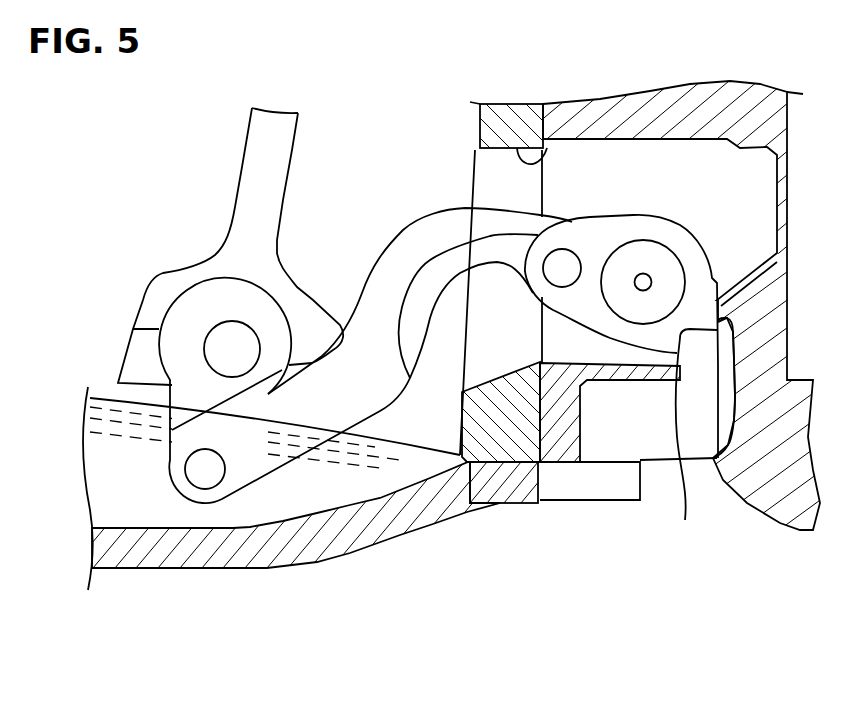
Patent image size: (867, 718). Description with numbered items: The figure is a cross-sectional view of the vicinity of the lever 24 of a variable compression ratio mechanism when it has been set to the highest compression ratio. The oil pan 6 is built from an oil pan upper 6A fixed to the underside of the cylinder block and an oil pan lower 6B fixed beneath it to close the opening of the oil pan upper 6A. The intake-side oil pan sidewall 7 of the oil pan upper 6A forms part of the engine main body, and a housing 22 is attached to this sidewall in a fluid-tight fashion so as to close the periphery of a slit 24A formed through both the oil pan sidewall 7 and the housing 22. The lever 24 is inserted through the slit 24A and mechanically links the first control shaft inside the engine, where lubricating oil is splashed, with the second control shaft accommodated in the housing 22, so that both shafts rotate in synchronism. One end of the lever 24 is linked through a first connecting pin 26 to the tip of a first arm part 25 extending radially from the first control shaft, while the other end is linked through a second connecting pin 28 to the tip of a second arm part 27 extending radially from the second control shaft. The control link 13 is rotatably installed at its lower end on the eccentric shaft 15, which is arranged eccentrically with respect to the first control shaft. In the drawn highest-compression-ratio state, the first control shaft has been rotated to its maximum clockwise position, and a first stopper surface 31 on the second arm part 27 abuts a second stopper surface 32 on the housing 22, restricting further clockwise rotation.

The control link 13 is at (263, 143).
The eccentric shaft 15 is at (227, 338).
The first arm part 25 is at (260, 447).
The first connecting pin 26 is at (205, 470).
The lever 24 is at (437, 227).
The slit 24A is at (547, 152).
The oil pan sidewall 7 is at (497, 123).
The housing 22 is at (755, 288).
The second arm part 27 is at (622, 270).
The second connecting pin 28 is at (562, 263).
The second stopper surface 32 is at (615, 441).
The first stopper surface 31 is at (716, 462).
The oil pan 6 is at (315, 520).
The oil pan upper 6A is at (497, 487).
The oil pan lower 6B is at (400, 513).